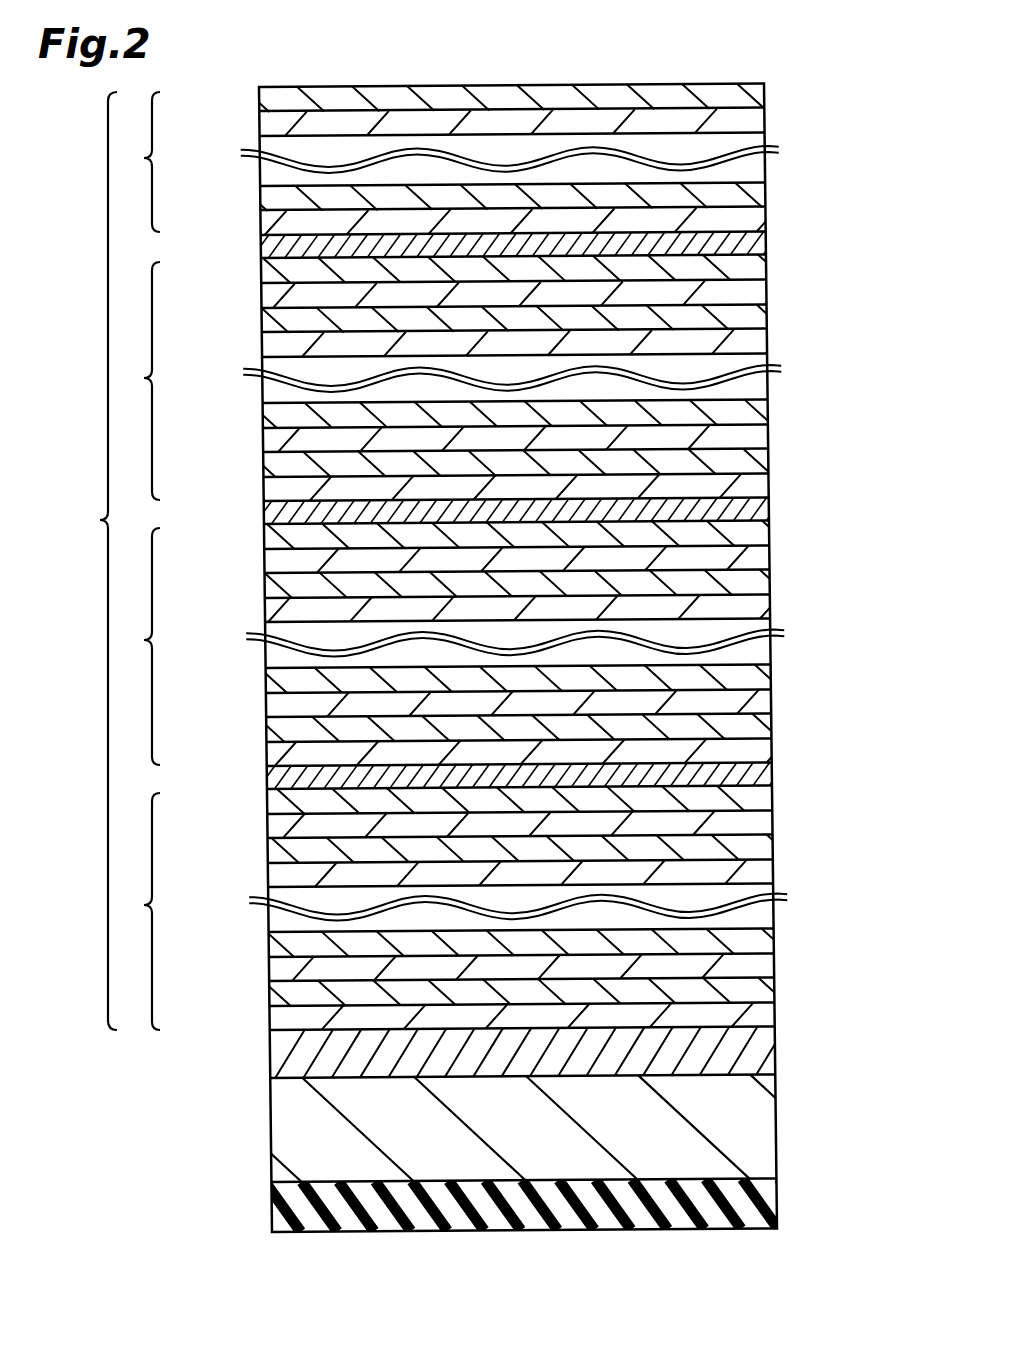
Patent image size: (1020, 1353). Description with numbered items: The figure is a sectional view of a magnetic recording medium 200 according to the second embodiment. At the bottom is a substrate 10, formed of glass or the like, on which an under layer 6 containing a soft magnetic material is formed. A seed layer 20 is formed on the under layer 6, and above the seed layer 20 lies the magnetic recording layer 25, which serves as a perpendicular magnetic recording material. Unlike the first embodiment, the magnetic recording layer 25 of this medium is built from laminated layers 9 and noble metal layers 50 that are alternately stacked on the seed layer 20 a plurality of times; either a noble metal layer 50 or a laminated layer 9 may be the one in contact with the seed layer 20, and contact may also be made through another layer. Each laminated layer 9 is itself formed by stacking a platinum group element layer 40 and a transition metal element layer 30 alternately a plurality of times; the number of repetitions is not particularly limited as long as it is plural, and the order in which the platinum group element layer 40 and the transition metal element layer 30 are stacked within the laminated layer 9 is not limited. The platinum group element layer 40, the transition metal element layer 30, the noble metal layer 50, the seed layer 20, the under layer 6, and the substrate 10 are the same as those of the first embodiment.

The magnetic recording medium 200 is at (750, 67).
The platinum group element layer 40 is at (259, 99).
The transition metal element layer 30 is at (259, 123).
The noble metal layer 50 is at (259, 248).
The laminated layer 9 is at (143, 561).
The magnetic recording layer 25 is at (91, 561).
The seed layer 20 is at (770, 1044).
The under layer 6 is at (770, 1117).
The substrate 10 is at (770, 1203).